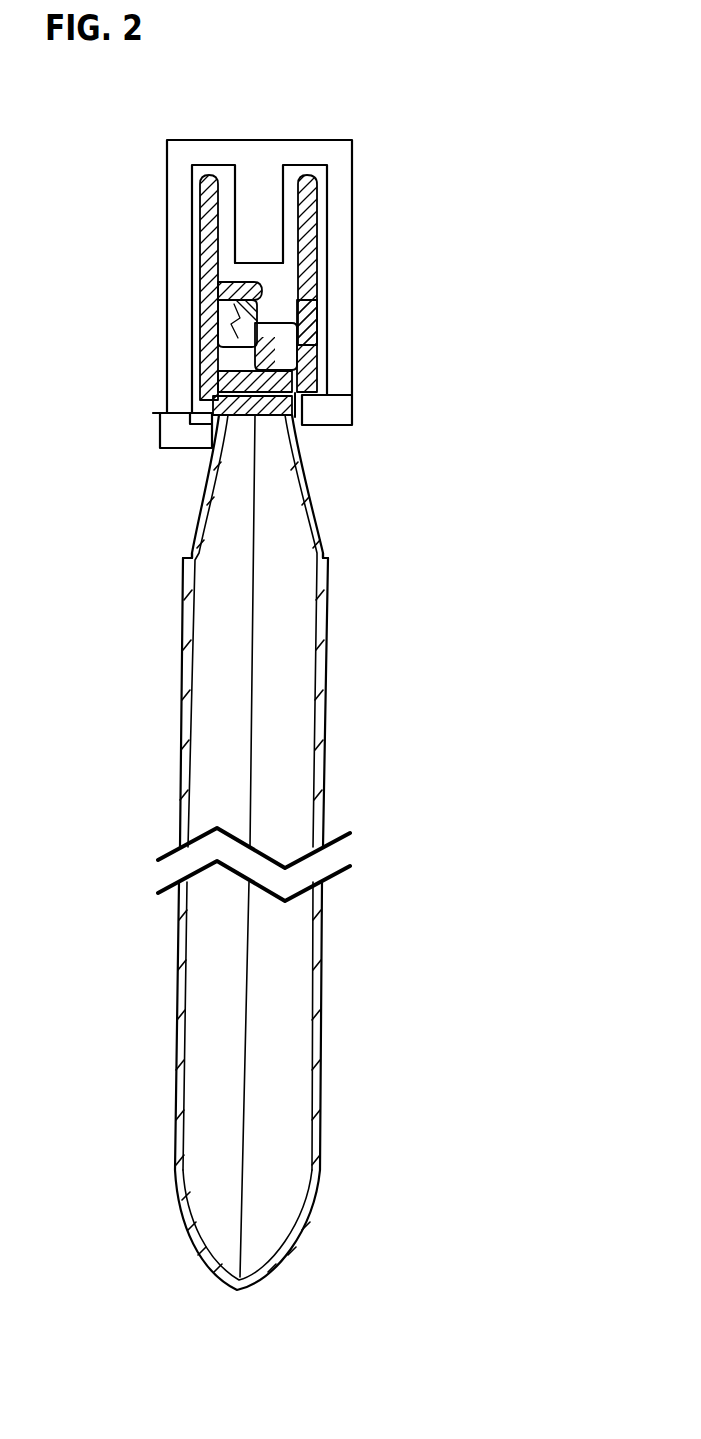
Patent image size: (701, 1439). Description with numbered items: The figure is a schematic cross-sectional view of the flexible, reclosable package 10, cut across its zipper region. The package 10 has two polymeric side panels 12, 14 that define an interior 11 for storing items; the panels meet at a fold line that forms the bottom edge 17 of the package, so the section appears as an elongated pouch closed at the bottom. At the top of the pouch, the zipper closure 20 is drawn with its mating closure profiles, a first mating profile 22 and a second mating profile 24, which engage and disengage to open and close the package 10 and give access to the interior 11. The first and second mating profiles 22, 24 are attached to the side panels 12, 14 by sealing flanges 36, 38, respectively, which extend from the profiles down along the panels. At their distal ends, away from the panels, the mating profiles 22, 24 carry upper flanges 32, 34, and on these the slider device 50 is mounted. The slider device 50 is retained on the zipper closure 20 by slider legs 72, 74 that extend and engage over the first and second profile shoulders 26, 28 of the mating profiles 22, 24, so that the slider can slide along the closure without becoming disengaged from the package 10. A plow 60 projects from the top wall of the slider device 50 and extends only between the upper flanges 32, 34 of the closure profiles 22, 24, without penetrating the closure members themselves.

The flexible, reclosable package 10 is at (464, 453).
The interior 11 is at (318, 1048).
The side panel 12 is at (182, 800).
The side panel 14 is at (322, 810).
The bottom edge 17 is at (235, 1292).
The zipper closure 20 is at (196, 271).
The first mating profile 22 is at (200, 199).
The second mating profile 24 is at (313, 340).
The first profile shoulder 26 is at (190, 410).
The second profile shoulder 28 is at (330, 393).
The upper flange 32 is at (205, 176).
The upper flange 34 is at (310, 177).
The sealing flange 36 is at (193, 603).
The sealing flange 38 is at (317, 612).
The slider device 50 is at (355, 153).
The plow 60 is at (320, 268).
The slider leg 72 is at (167, 448).
The slider leg 74 is at (352, 427).